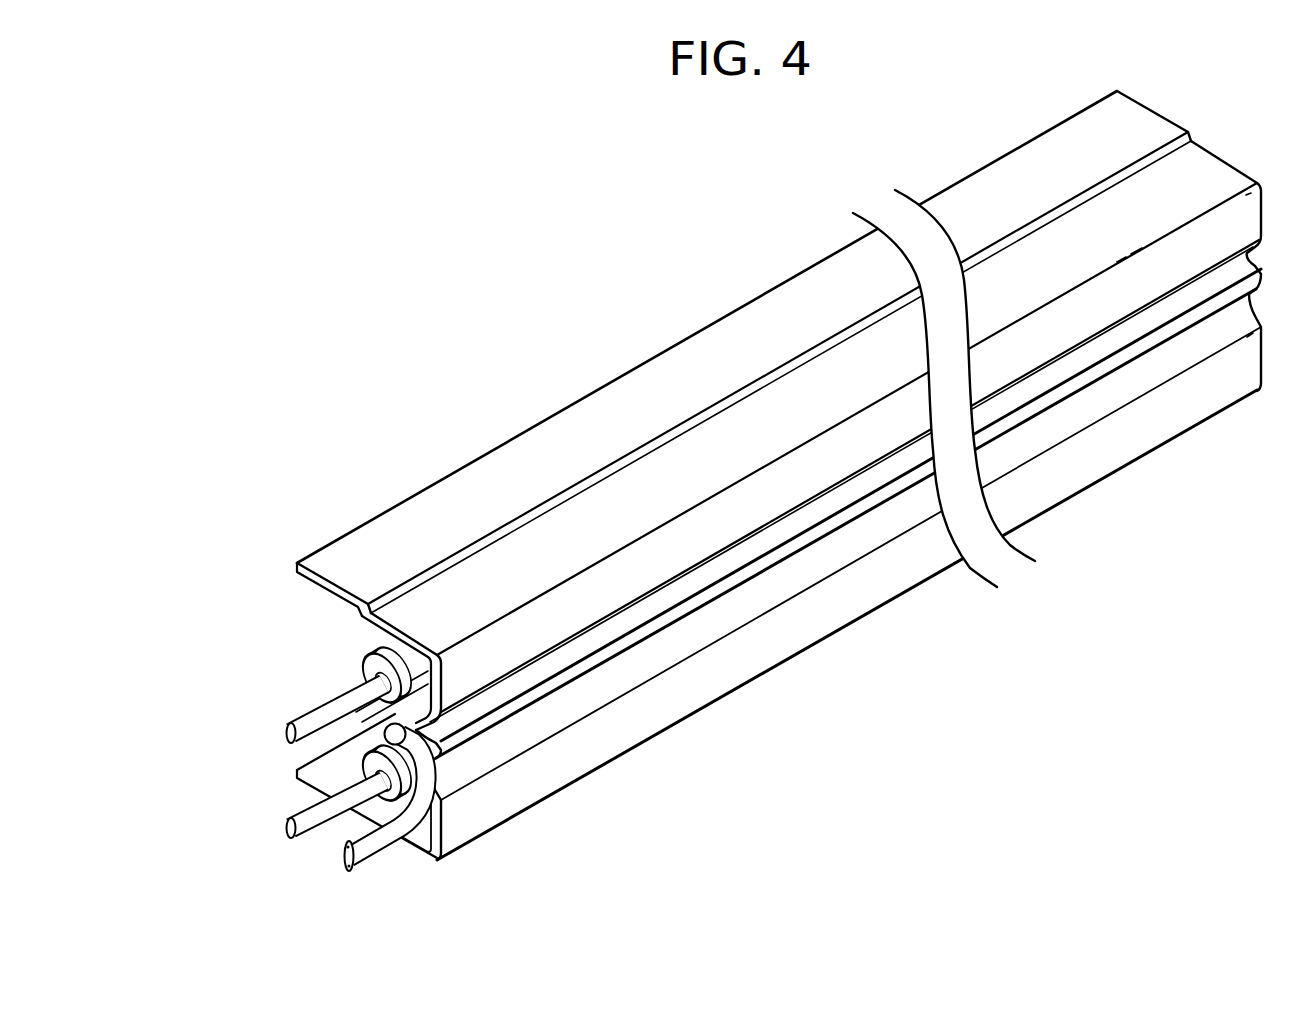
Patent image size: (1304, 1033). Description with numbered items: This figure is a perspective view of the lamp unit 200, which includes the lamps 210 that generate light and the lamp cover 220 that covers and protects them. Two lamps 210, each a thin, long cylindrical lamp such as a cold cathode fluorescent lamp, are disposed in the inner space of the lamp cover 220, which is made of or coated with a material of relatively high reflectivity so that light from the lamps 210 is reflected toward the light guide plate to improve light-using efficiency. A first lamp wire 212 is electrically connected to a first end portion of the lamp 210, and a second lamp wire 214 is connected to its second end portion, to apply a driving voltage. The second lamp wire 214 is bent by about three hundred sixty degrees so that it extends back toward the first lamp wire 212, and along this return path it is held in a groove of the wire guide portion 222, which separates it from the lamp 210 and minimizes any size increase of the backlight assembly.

The lamp unit 200 is at (779, 500).
The lamp 210 is at (388, 654).
The first lamp wire 212 is at (320, 714).
The second lamp wire 214 is at (370, 843).
The lamp cover 220 is at (547, 443).
The wire guide portion 222 is at (450, 790).